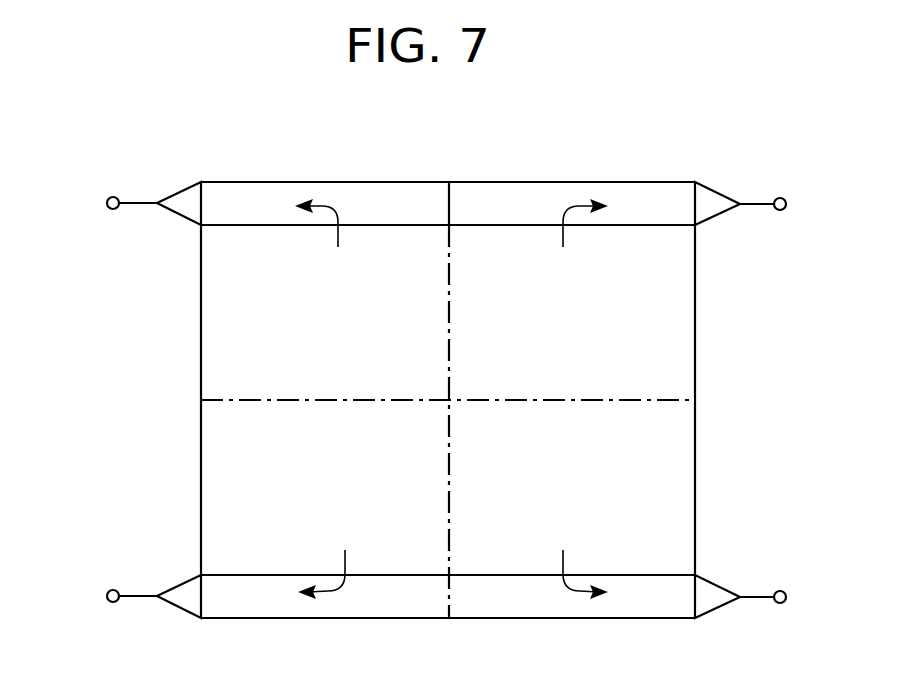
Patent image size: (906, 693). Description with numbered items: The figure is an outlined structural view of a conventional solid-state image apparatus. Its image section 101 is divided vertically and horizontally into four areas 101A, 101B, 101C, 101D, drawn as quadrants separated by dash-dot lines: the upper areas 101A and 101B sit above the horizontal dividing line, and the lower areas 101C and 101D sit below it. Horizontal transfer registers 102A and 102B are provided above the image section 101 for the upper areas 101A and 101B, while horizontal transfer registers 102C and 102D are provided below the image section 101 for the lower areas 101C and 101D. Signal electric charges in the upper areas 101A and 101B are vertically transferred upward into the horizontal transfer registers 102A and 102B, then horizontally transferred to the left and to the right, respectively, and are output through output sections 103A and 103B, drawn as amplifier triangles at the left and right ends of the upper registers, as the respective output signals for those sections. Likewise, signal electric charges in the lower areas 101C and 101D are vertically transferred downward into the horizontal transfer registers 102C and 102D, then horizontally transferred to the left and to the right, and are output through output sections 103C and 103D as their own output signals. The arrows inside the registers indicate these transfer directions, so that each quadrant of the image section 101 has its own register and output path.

The image section 101 is at (704, 382).
The upper area 101A is at (237, 292).
The upper area 101B is at (632, 292).
The lower area 101C is at (237, 472).
The lower area 101D is at (628, 493).
The horizontal transfer register 102A is at (402, 202).
The horizontal transfer register 102B is at (533, 208).
The horizontal transfer register 102C is at (400, 598).
The horizontal transfer register 102D is at (557, 598).
The output section 103A is at (187, 200).
The output section 103B is at (710, 202).
The output section 103C is at (190, 598).
The output section 103D is at (702, 607).